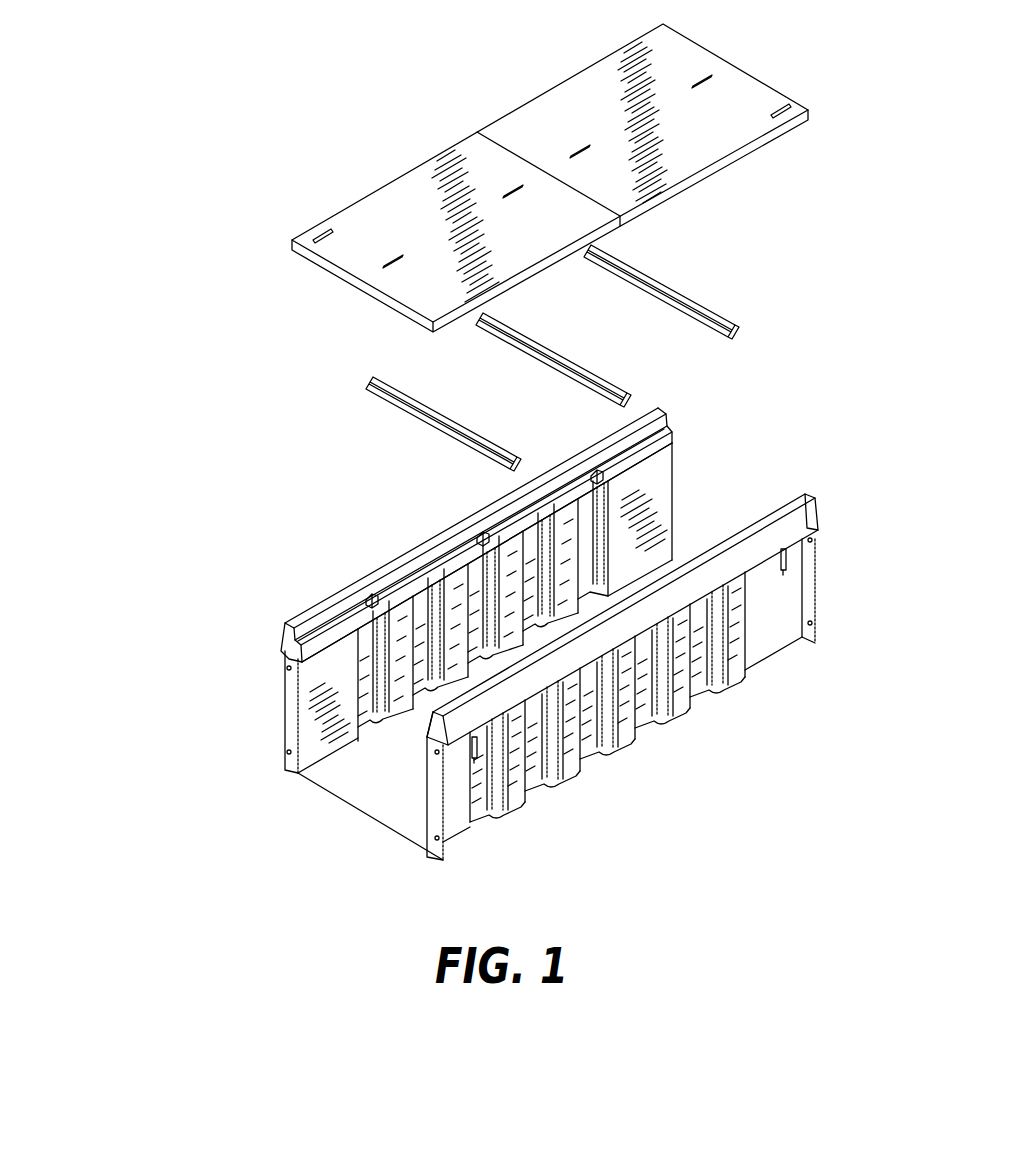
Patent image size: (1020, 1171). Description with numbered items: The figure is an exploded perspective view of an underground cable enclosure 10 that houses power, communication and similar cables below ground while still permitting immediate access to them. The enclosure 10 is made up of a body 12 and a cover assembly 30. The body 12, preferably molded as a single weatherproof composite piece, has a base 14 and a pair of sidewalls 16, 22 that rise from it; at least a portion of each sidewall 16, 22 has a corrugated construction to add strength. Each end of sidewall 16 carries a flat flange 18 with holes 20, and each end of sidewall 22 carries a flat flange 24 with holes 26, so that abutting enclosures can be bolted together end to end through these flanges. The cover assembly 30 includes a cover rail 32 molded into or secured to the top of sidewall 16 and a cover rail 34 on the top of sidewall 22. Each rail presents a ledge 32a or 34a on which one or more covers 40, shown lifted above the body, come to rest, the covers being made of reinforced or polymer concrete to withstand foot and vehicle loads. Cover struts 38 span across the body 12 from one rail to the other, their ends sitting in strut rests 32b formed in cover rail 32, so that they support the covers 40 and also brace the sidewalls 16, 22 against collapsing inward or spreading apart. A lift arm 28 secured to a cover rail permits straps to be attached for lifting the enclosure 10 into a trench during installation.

The underground cable enclosure 10 is at (138, 411).
The body 12 is at (306, 796).
The base 14 is at (360, 815).
The sidewall 16 is at (652, 503).
The flange 18 is at (283, 735).
The holes 20 is at (285, 665).
The sidewall 22 is at (760, 650).
The flange 24 is at (817, 578).
The holes 26 is at (815, 535).
The lift arm 28 is at (782, 573).
The cover assembly 30 is at (783, 211).
The cover rail 32 is at (287, 620).
The ledge 32a is at (432, 568).
The strut rests 32b is at (597, 477).
The cover rail 34 is at (810, 515).
The ledge 34a is at (428, 718).
The cover struts 38 is at (700, 315).
The covers 40 is at (527, 118).